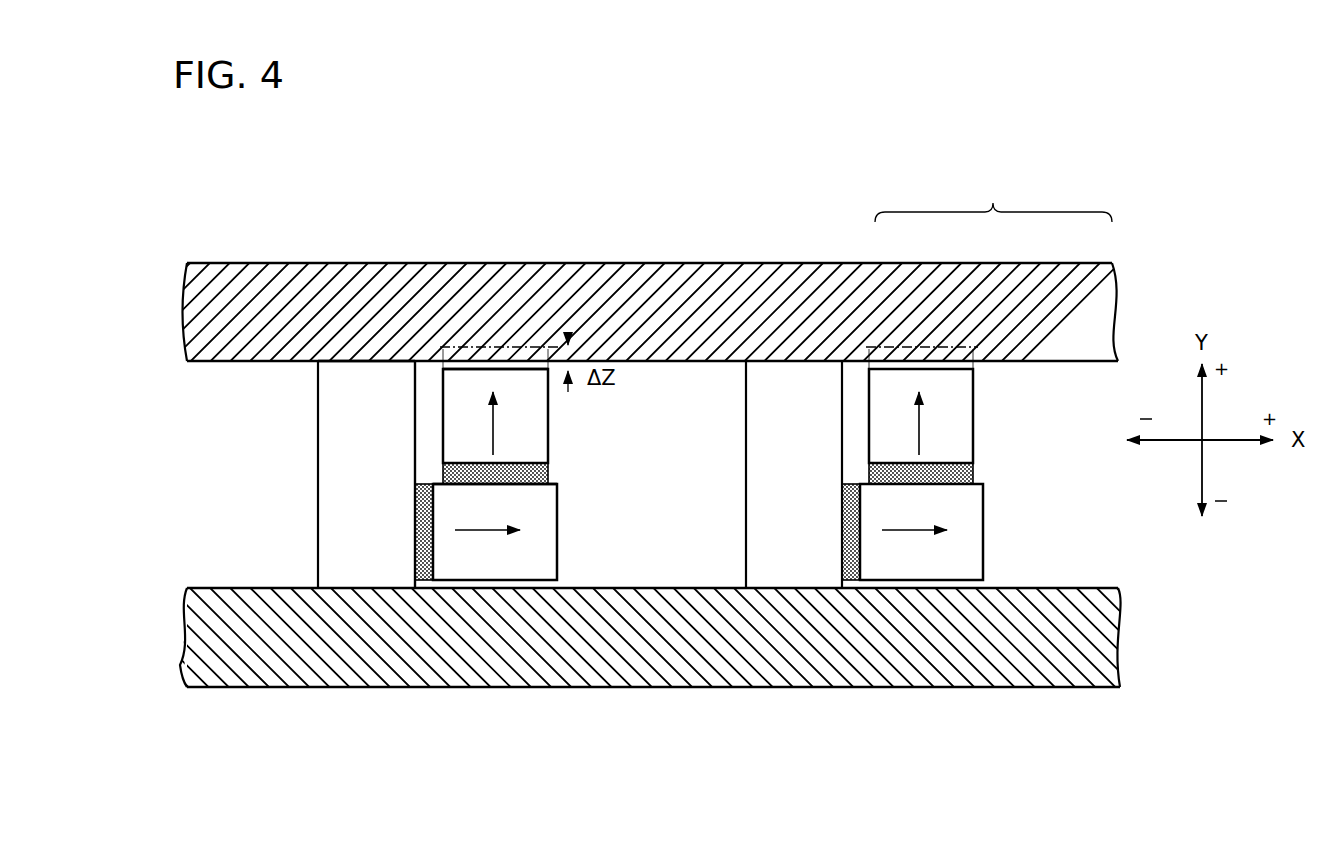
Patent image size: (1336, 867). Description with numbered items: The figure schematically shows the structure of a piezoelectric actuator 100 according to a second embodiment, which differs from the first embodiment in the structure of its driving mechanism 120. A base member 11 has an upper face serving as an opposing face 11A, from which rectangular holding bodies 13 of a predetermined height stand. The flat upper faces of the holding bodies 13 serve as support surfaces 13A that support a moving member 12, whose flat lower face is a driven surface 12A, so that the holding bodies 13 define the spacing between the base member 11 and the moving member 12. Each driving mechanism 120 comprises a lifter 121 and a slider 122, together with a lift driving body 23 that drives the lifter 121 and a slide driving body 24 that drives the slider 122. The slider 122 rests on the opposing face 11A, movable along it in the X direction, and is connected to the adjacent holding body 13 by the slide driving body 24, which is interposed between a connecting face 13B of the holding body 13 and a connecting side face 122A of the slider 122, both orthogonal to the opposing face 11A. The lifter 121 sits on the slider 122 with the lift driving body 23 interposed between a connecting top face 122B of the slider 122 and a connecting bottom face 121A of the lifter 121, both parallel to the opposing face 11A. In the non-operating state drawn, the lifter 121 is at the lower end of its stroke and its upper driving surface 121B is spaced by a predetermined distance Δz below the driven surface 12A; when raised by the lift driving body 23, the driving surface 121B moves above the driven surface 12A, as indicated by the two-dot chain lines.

The piezoelectric actuator 100 is at (806, 167).
The base member 11 is at (331, 692).
The opposing face 11A is at (262, 590).
The moving member 12 is at (330, 258).
The driven surface 12A is at (290, 357).
The holding body 13 is at (314, 460).
The support surface 13A is at (352, 361).
The connecting face 13B is at (413, 513).
The driving mechanism 120 is at (653, 383).
The lifter 121 is at (558, 408).
The connecting bottom face 121A is at (517, 463).
The driving surface 121B is at (508, 368).
The slider 122 is at (565, 532).
The connecting side face 122A is at (433, 562).
The connecting top face 122B is at (520, 484).
The lift driving body 23 is at (548, 474).
The slide driving body 24 is at (420, 558).